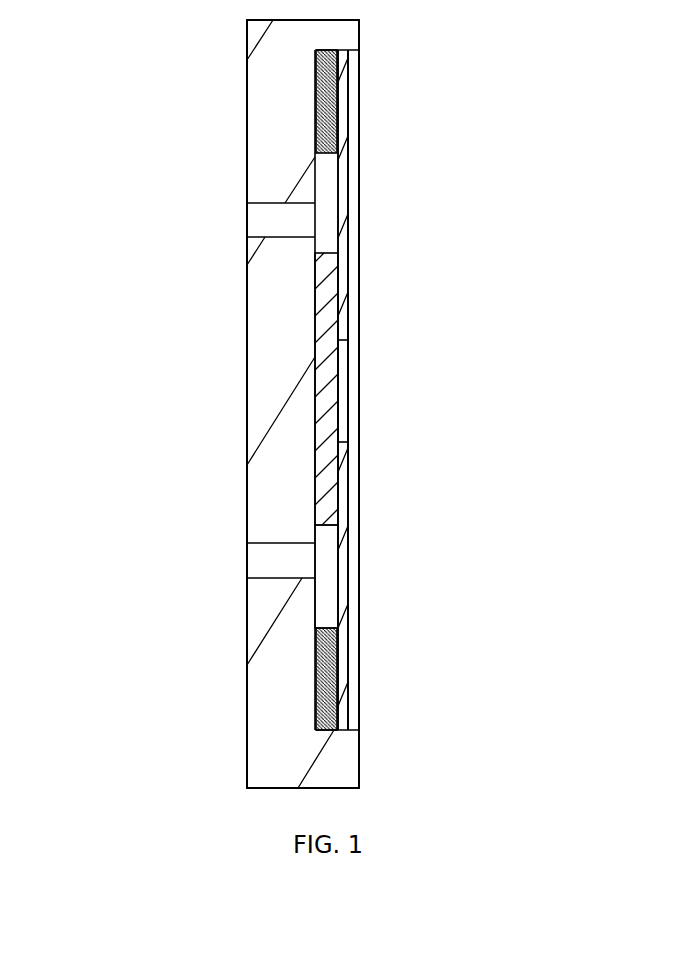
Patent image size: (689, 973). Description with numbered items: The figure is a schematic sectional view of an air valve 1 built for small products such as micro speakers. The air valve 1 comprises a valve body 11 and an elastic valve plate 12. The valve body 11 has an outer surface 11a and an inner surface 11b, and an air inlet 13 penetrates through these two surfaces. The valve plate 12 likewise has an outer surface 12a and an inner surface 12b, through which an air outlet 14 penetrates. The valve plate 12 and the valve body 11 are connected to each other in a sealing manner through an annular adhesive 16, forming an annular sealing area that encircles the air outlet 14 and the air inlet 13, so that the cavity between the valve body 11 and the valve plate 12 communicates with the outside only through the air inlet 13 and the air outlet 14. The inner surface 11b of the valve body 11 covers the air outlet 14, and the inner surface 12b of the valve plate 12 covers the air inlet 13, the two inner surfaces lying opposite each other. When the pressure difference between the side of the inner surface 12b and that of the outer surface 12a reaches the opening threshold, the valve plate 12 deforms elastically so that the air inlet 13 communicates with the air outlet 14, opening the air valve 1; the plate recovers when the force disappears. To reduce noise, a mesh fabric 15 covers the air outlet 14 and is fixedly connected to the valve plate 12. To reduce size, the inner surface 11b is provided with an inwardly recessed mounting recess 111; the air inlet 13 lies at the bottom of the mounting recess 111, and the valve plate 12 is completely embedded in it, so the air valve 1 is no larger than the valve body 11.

The air valve 1 is at (198, 107).
The valve body 11 is at (272, 680).
The outer surface of the valve body 11a is at (247, 405).
The inner surface of the valve body 11b is at (317, 603).
The mounting recess 111 is at (345, 727).
The valve plate 12 is at (343, 488).
The outer surface of the valve plate 12a is at (348, 238).
The inner surface of the valve plate 12b is at (338, 173).
The air inlet 13 is at (262, 217).
The air outlet 14 is at (342, 380).
The mesh fabric 15 is at (327, 318).
The annular adhesive 16 is at (326, 86).